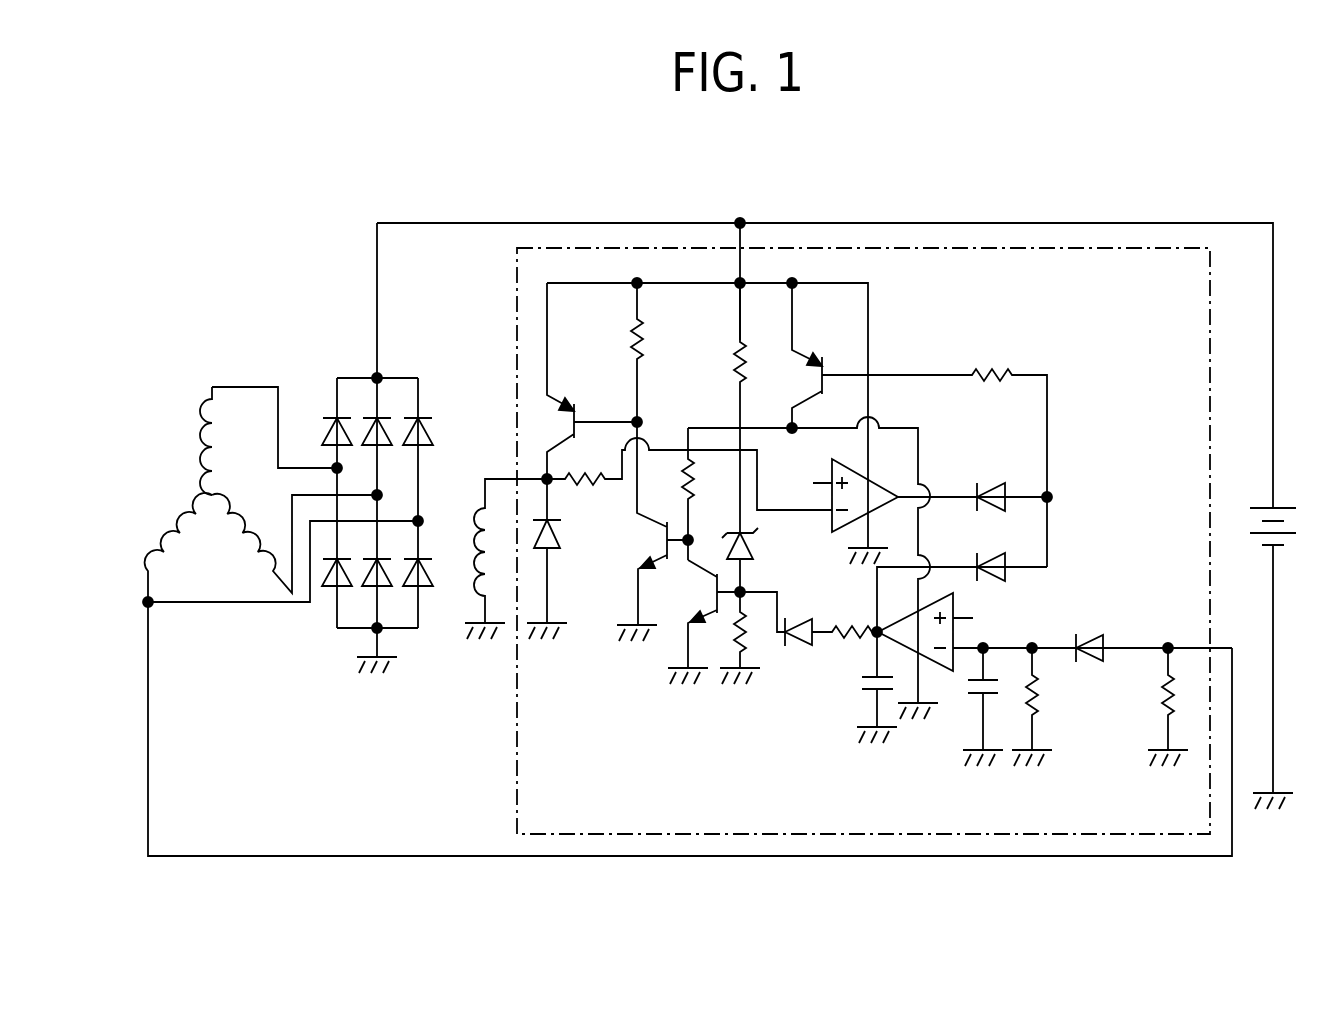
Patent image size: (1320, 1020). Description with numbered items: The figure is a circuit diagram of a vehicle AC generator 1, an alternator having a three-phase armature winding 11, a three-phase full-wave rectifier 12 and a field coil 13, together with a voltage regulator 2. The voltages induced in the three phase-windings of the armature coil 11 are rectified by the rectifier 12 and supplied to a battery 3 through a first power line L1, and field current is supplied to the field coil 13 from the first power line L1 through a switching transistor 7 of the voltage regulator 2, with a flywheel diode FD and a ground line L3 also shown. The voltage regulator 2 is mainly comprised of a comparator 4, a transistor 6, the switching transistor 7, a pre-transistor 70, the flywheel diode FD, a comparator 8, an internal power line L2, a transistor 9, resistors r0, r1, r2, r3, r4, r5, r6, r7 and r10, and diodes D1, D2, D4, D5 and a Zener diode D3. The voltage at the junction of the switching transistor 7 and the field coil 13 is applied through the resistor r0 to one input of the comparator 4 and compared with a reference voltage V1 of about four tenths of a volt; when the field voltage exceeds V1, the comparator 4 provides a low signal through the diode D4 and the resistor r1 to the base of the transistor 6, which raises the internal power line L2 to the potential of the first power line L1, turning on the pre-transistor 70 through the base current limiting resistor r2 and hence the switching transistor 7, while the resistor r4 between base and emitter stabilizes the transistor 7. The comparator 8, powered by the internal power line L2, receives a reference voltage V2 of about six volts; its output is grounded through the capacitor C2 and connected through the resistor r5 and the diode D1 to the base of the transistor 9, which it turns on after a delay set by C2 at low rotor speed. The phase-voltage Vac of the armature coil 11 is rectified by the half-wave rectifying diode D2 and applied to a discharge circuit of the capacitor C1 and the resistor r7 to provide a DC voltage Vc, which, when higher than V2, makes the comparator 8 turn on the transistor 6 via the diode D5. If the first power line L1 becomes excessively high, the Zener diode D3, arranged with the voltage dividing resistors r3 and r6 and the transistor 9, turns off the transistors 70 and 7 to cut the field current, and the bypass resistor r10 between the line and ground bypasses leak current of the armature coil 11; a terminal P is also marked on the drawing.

The vehicle AC generator 1 is at (333, 296).
The voltage regulator 2 is at (512, 694).
The battery 3 is at (1274, 552).
The comparator 4 is at (866, 492).
The transistor 6 is at (835, 368).
The switching transistor 7 is at (562, 432).
The comparator 8 is at (907, 628).
The transistor 9 is at (702, 590).
The three-phase armature winding 11 is at (217, 563).
The three-phase full-wave rectifier 12 is at (420, 410).
The field coil 13 is at (478, 548).
The pre-transistor 70 is at (645, 586).
The flywheel diode FD is at (552, 551).
The resistor r0 is at (582, 487).
The resistor r1 is at (978, 375).
The resistor r2 is at (682, 474).
The resistor r3 is at (738, 347).
The resistor r4 is at (637, 338).
The resistor r5 is at (850, 640).
The resistor r6 is at (728, 622).
The resistor r7 is at (1040, 690).
The bypass resistor r10 is at (1160, 700).
The diode D1 is at (803, 650).
The half-wave rectifying diode D2 is at (1103, 645).
The Zener diode D3 is at (752, 546).
The diode D4 is at (972, 515).
The diode D5 is at (982, 592).
The capacitor C1 is at (978, 705).
The capacitor C2 is at (867, 687).
The first power line L1 is at (1035, 225).
The internal power line L2 is at (752, 428).
The line L3 is at (752, 857).
The reference voltage V1 is at (793, 483).
The reference voltage V2 is at (998, 618).
The DC voltage Vc is at (1014, 649).
The phase-voltage Vac is at (952, 857).
The terminal P is at (1212, 648).